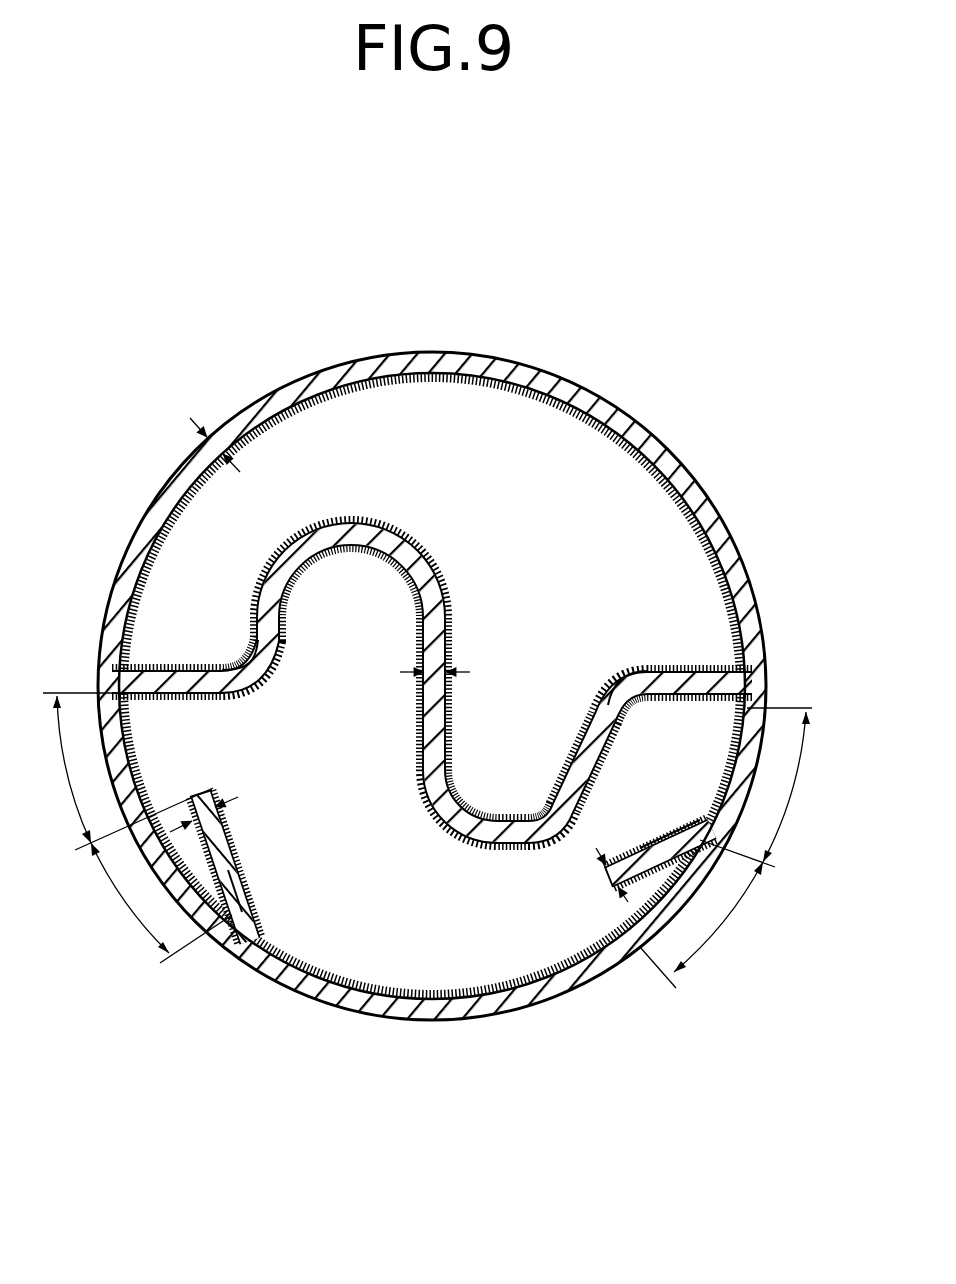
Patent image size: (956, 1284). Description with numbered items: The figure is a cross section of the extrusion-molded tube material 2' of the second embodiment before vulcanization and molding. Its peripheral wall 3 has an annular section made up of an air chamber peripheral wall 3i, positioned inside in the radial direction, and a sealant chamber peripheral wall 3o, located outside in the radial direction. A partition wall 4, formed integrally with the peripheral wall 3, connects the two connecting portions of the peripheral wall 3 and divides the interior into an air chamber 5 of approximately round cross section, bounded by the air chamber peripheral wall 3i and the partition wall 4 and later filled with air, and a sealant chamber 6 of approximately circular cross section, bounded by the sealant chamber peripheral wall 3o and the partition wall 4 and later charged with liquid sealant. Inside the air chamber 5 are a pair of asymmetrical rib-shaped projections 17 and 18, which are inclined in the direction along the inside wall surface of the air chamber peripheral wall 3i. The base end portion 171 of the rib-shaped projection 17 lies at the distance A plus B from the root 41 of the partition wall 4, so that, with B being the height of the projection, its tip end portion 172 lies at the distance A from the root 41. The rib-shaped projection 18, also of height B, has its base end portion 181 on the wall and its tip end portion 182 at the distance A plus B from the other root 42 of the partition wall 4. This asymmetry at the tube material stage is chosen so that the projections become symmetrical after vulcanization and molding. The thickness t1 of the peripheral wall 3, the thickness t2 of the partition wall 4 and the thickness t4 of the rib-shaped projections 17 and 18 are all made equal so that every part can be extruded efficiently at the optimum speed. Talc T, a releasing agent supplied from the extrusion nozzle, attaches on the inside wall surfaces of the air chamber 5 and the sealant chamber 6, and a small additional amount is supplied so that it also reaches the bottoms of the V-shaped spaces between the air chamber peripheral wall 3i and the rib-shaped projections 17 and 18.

The tube material 2' is at (688, 328).
The peripheral wall 3 is at (467, 681).
The sealant chamber peripheral wall 3o is at (425, 351).
The air chamber peripheral wall 3i is at (409, 1022).
The partition wall 4 is at (456, 718).
The root of the partition wall 41 is at (132, 666).
The root of the partition wall 42 is at (738, 673).
The air chamber 5 is at (420, 911).
The sealant chamber 6 is at (560, 561).
The rib-shaped projection 17 is at (248, 867).
The base end portion 171 is at (242, 910).
The tip end portion 172 is at (201, 790).
The rib-shaped projection 18 is at (627, 844).
The base end portion 181 is at (696, 832).
The tip end portion 182 is at (613, 889).
The talc T is at (503, 388).
The thickness of the peripheral wall t1 is at (203, 446).
The thickness of the partition wall t2 is at (421, 689).
The thickness of the rib-shaped projections t4 is at (226, 818).
The distance A is at (427, 777).
The height of the rib-shaped projection B is at (425, 888).